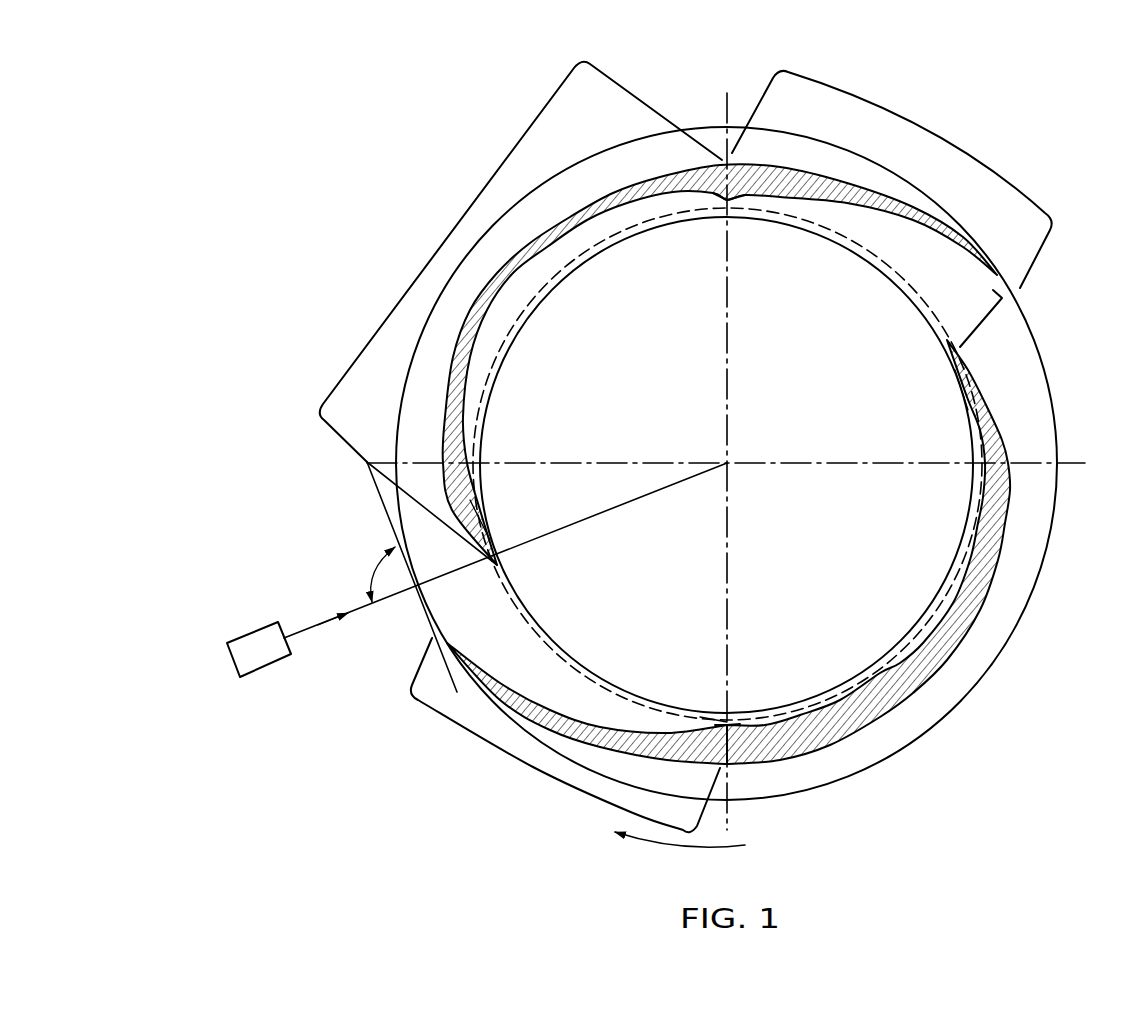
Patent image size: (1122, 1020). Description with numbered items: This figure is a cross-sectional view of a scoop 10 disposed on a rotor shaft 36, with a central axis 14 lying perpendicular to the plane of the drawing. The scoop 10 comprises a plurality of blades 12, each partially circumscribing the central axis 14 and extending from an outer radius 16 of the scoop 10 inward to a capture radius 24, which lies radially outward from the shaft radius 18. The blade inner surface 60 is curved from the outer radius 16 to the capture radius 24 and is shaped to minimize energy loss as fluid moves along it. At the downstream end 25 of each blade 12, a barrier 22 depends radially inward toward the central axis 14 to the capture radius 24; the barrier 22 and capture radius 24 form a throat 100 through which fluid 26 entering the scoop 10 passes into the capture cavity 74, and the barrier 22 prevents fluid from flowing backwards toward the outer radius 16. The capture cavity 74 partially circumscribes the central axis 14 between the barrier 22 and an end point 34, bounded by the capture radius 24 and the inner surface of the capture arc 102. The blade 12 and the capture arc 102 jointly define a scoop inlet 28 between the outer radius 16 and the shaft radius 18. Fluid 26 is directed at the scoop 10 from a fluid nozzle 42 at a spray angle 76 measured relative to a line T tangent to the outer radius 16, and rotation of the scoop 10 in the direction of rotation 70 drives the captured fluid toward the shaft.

The scoop 10 is at (693, 108).
The blade 12 is at (934, 156).
The central axis 14 is at (727, 463).
The outer radius 16 is at (1057, 528).
The shaft radius 18 is at (509, 345).
The barrier 22 is at (735, 723).
The capture radius 24 is at (840, 233).
The downstream end 25 is at (952, 532).
The fluid 26 is at (305, 644).
The scoop inlet 28 is at (979, 333).
The end point 34 is at (483, 520).
The rotor shaft 36 is at (810, 605).
The fluid nozzle 42 is at (248, 636).
The blade inner surface 60 is at (883, 208).
The direction of rotation 70 is at (663, 847).
The capture cavity 74 is at (623, 223).
The spray angle 76 is at (372, 570).
The throat 100 is at (710, 714).
The capture arc 102 is at (455, 225).
The tangent line T is at (376, 485).